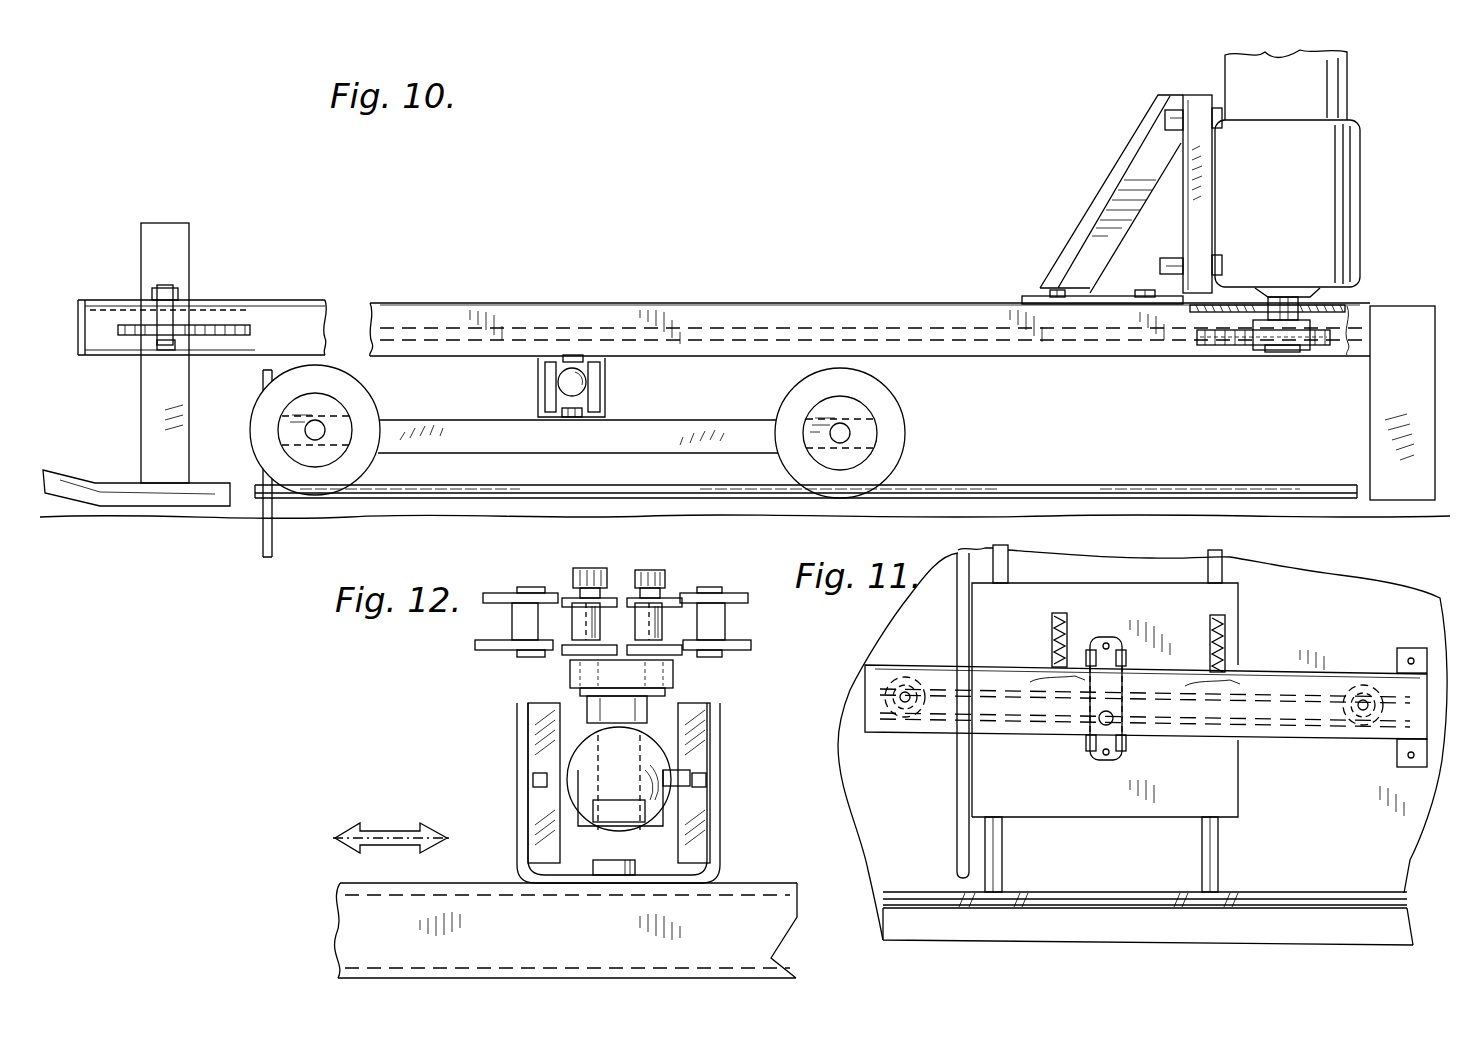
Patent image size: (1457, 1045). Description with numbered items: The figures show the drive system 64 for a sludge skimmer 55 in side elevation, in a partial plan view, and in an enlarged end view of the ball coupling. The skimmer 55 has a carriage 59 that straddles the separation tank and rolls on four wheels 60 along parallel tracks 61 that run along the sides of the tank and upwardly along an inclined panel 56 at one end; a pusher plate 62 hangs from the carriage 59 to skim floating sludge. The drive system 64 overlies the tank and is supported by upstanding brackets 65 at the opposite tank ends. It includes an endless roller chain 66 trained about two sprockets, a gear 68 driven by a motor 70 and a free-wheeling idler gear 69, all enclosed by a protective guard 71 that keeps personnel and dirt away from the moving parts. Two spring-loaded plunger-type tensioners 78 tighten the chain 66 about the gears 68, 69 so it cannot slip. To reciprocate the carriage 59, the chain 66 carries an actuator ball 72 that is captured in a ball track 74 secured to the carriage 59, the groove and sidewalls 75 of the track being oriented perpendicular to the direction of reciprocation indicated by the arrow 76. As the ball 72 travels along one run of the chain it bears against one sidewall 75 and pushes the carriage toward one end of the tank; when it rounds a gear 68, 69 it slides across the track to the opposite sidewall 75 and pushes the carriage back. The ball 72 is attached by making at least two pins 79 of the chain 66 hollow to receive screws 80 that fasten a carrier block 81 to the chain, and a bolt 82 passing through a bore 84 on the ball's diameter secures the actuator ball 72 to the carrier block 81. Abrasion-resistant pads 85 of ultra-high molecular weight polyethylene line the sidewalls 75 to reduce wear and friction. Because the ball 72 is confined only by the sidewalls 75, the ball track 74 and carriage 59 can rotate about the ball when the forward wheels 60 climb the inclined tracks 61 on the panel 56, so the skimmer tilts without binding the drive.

In FIG. 10, the skimmer 55 is at (490, 398).
In FIG. 11, the skimmer 55 is at (1088, 848).
In FIG. 10, the inclined panel 56 is at (72, 473).
In FIG. 10, the carriage 59 is at (548, 446).
In FIG. 12, the carriage 59 is at (478, 905).
In FIG. 10, the wheels 60 is at (348, 390).
In FIG. 11, the wheels 60 is at (993, 905).
In FIG. 10, the tracks 61 is at (1015, 485).
In FIG. 11, the tracks 61 is at (1355, 908).
In FIG. 10, the pusher plate 62 is at (262, 533).
In FIG. 11, the pusher plate 62 is at (955, 848).
In FIG. 10, the drive system 64 is at (738, 322).
In FIG. 11, the drive system 64 is at (1107, 722).
In FIG. 10, the upstanding brackets 65 is at (162, 243).
In FIG. 11, the upstanding brackets 65 is at (1410, 648).
In FIG. 10, the endless roller chain 66 is at (832, 330).
In FIG. 12, the endless roller chain 66 is at (619, 594).
In FIG. 11, the endless roller chain 66 is at (935, 725).
In FIG. 10, the driven gear 68 is at (1216, 350).
In FIG. 11, the driven gear 68 is at (1358, 725).
In FIG. 10, the idler gear 69 is at (140, 336).
In FIG. 11, the idler gear 69 is at (903, 718).
In FIG. 10, the motor 70 is at (1282, 170).
In FIG. 10, the protective guard 71 is at (580, 310).
In FIG. 11, the protective guard 71 is at (1245, 740).
In FIG. 10, the actuator ball 72 is at (587, 380).
In FIG. 12, the actuator ball 72 is at (582, 752).
In FIG. 10, the ball track 74 is at (578, 418).
In FIG. 12, the ball track 74 is at (576, 878).
In FIG. 11, the ball track 74 is at (1088, 745).
In FIG. 10, the sidewalls 75 is at (570, 418).
In FIG. 12, the sidewalls 75 is at (615, 819).
In FIG. 12, the arrow 76 is at (385, 823).
In FIG. 11, the tensioners 78 is at (1050, 628).
In FIG. 12, the pins 79 is at (565, 628).
In FIG. 12, the screws 80 is at (596, 568).
In FIG. 12, the carrier block 81 is at (570, 676).
In FIG. 12, the bolt 82 is at (660, 830).
In FIG. 12, the bore 84 is at (708, 770).
In FIG. 10, the abrasion-resistant pads 85 is at (542, 380).
In FIG. 12, the abrasion-resistant pads 85 is at (545, 748).